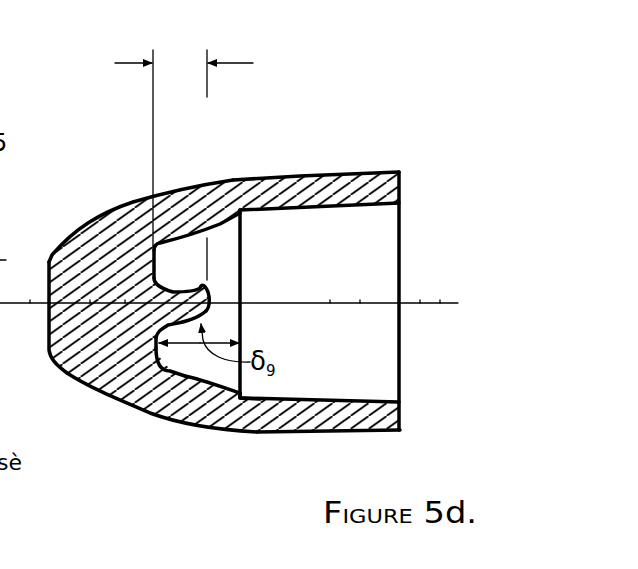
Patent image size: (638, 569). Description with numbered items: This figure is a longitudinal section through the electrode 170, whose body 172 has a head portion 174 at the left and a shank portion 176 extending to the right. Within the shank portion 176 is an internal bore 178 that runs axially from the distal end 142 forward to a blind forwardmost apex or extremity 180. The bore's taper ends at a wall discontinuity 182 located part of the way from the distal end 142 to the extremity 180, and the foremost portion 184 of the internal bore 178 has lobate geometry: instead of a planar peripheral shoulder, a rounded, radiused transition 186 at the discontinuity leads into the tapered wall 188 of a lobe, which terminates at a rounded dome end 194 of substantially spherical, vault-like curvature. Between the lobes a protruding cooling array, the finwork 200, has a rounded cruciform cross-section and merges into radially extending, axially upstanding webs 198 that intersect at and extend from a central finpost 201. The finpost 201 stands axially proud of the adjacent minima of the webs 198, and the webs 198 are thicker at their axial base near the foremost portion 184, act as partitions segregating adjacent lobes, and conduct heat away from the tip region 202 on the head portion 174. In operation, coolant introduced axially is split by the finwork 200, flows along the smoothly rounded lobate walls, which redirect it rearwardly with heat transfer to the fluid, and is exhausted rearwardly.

The distal end 142 is at (400, 412).
The electrode 170 is at (147, 130).
The body 172 is at (207, 196).
The head portion 174 is at (117, 207).
The shank portion 176 is at (310, 185).
The internal bore 178 is at (374, 234).
The blind forwardmost apex or extremity 180 is at (146, 247).
The wall discontinuity 182 is at (290, 405).
The foremost portion of internal bore 184 is at (225, 259).
The rounded transition 186 is at (220, 375).
The tapered wall 188 is at (198, 362).
The rounded dome end 194 is at (152, 262).
The webs 198 is at (193, 252).
The finwork 200 is at (178, 376).
The finpost 201 is at (247, 322).
The tip region 202 is at (48, 270).